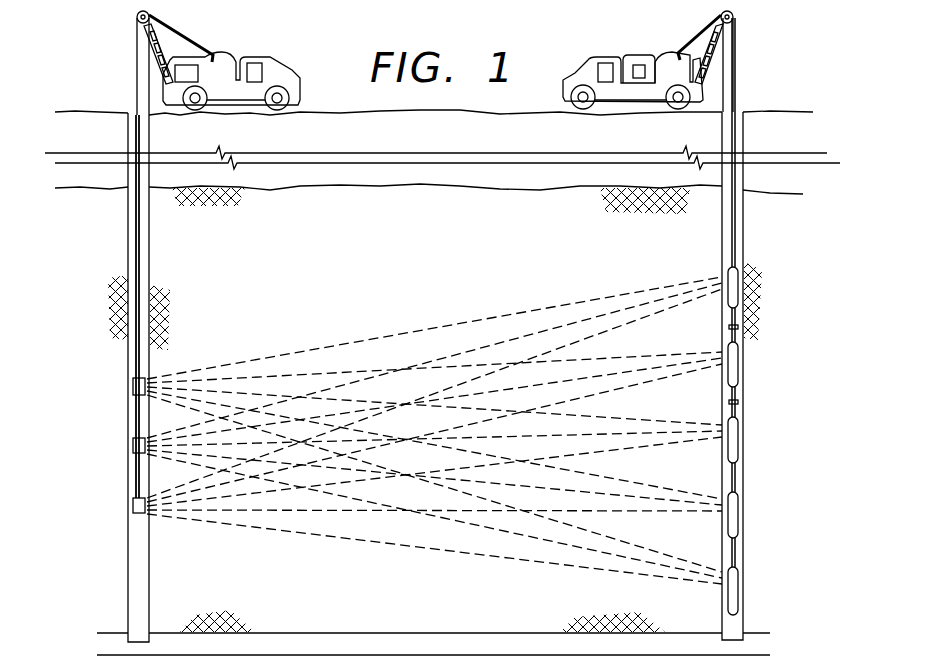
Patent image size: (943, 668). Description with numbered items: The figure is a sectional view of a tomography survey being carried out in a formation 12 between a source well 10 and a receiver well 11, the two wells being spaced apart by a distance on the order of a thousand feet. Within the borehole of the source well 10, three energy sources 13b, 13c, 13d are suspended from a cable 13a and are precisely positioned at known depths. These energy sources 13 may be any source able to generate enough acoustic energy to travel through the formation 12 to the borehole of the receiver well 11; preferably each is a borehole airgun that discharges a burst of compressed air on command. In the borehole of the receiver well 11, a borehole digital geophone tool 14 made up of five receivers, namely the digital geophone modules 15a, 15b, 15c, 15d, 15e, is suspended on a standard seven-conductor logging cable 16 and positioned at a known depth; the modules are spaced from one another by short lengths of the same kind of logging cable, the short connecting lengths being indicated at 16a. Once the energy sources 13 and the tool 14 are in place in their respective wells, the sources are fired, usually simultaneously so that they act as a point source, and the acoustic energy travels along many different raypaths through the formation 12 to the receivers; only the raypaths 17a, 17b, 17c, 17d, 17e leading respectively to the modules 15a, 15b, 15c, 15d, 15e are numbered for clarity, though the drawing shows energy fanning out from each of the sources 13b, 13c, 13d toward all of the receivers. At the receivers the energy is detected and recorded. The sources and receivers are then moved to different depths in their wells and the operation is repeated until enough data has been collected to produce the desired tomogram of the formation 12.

The source well 10 is at (150, 252).
The receiver well 11 is at (722, 233).
The formation 12 is at (443, 268).
The energy sources 13 is at (80, 322).
The cable 13a is at (136, 229).
The energy source 13b is at (133, 386).
The energy source 13c is at (133, 445).
The energy source 13d is at (106, 514).
The borehole digital geophone tool 14 is at (793, 317).
The digital geophone module 15a is at (733, 283).
The digital geophone module 15b is at (733, 362).
The digital geophone module 15c is at (733, 436).
The digital geophone module 15d is at (735, 515).
The digital geophone module 15e is at (763, 591).
The logging cable 16 is at (743, 218).
The cable connector 16a is at (738, 327).
The raypath 17a is at (357, 342).
The raypath 17b is at (303, 378).
The raypath 17c is at (250, 395).
The raypath 17d is at (207, 403).
The raypath 17e is at (179, 405).